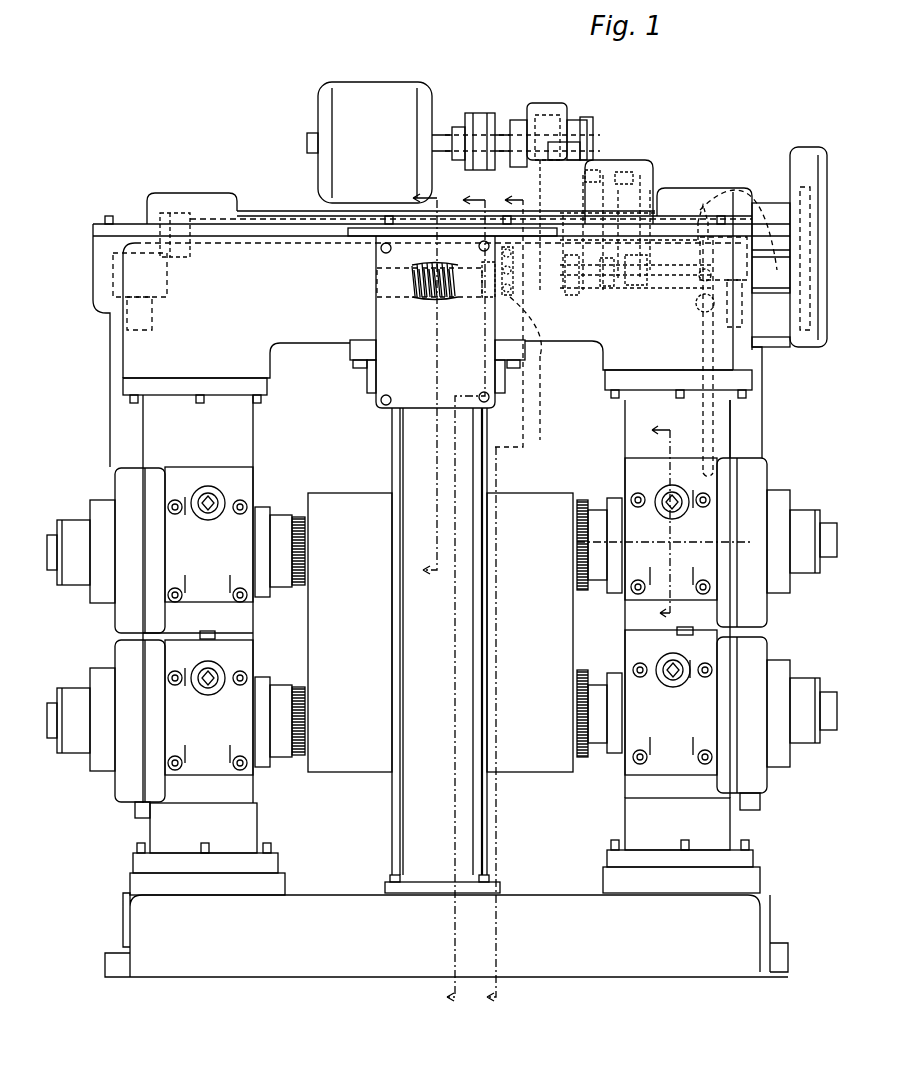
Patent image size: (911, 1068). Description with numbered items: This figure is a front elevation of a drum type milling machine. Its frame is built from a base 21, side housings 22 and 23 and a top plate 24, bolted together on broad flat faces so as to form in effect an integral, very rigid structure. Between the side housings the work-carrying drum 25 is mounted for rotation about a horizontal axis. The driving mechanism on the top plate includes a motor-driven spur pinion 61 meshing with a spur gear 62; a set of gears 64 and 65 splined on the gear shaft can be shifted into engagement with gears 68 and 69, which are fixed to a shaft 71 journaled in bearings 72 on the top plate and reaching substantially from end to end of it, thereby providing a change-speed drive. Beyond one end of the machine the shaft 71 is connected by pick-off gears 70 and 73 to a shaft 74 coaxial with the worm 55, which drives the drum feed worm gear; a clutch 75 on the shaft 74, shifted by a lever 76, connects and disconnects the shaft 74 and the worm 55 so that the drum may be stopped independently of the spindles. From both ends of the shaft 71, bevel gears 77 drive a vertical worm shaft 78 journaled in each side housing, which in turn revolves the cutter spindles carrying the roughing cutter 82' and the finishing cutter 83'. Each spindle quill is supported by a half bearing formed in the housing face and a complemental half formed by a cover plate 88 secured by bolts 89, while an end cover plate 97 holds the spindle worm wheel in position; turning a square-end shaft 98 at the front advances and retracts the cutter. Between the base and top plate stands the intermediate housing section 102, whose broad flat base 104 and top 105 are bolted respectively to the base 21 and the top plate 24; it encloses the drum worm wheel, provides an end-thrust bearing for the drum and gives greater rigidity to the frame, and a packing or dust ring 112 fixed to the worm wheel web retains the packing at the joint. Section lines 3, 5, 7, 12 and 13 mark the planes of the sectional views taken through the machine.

The motor-driven spur pinion 61 is at (545, 105).
The spur gear 62 is at (595, 167).
The shiftable gear 64 is at (609, 180).
The shiftable gear 65 is at (612, 282).
The gear 68 is at (572, 296).
The gear 69 is at (636, 286).
The pick-off gear 70 is at (810, 193).
The shaft 71 is at (302, 222).
The bearing 72 is at (205, 224).
The pick-off gear 73 is at (812, 322).
The shaft 74 is at (812, 262).
The clutch 75 is at (612, 358).
The lever 76 is at (712, 410).
The bevel gears 77 is at (113, 262).
The vertical worm shaft 78 is at (152, 322).
The top plate 24 is at (253, 265).
The worm 55 is at (432, 301).
The top of intermediate housing section 105 is at (353, 352).
The section line 5 is at (433, 391).
The section line 3 is at (470, 598).
The section line 7 is at (505, 596).
The intermediate housing section 102 is at (415, 648).
The packing or dust ring 112 is at (397, 820).
The base of intermediate housing section 104 is at (500, 886).
The work-carrying drum 25 is at (327, 498).
The roughing cutter 82' is at (438, 526).
The finishing cutter 83' is at (438, 699).
The side housing 22 is at (253, 827).
The side housing 23 is at (637, 807).
The cover plate 88 is at (688, 467).
The bolts 89 is at (703, 662).
The square-end shaft 98 is at (665, 488).
The end cover plate 97 is at (757, 486).
The section line 12 is at (561, 554).
The section line 13 is at (677, 520).
The base 21 is at (262, 963).